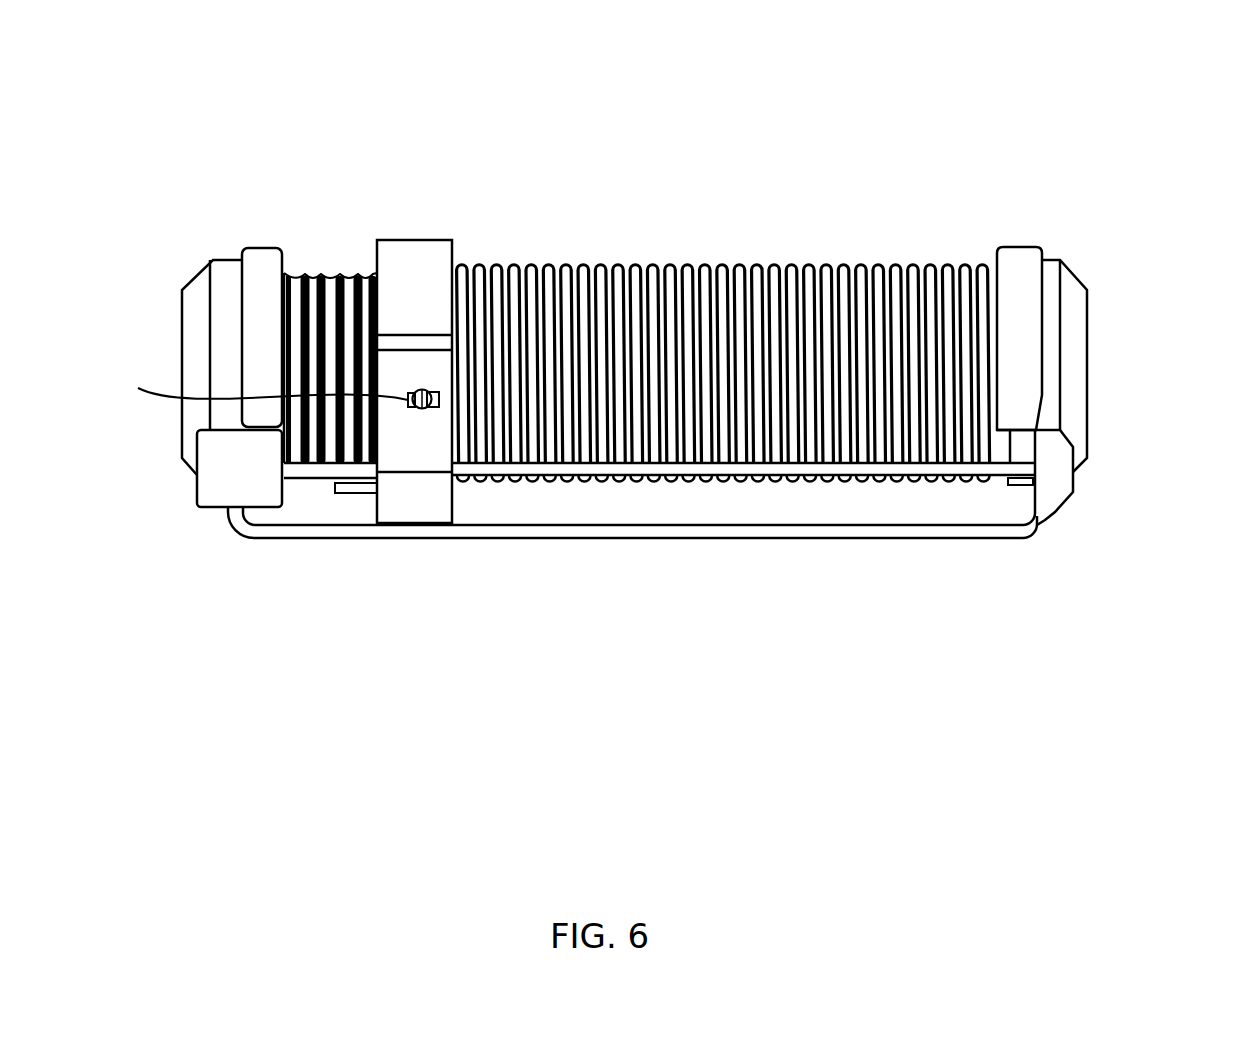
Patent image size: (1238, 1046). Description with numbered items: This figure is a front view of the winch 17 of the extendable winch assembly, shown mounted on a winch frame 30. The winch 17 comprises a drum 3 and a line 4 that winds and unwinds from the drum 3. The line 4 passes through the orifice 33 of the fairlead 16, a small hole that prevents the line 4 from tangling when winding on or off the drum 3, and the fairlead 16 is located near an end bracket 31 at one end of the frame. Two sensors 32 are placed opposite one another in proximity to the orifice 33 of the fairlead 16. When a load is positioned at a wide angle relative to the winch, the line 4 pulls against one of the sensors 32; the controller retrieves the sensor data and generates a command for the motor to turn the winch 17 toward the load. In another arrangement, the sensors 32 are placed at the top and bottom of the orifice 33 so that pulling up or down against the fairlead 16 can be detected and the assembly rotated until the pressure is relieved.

The winch 17 is at (166, 106).
The drum 3 is at (330, 270).
The line 4 is at (765, 263).
The fairlead 16 is at (405, 257).
The winch frame 30 is at (1040, 522).
The end bracket 31 is at (195, 290).
The sensor 32 is at (250, 388).
The orifice 33 is at (422, 410).